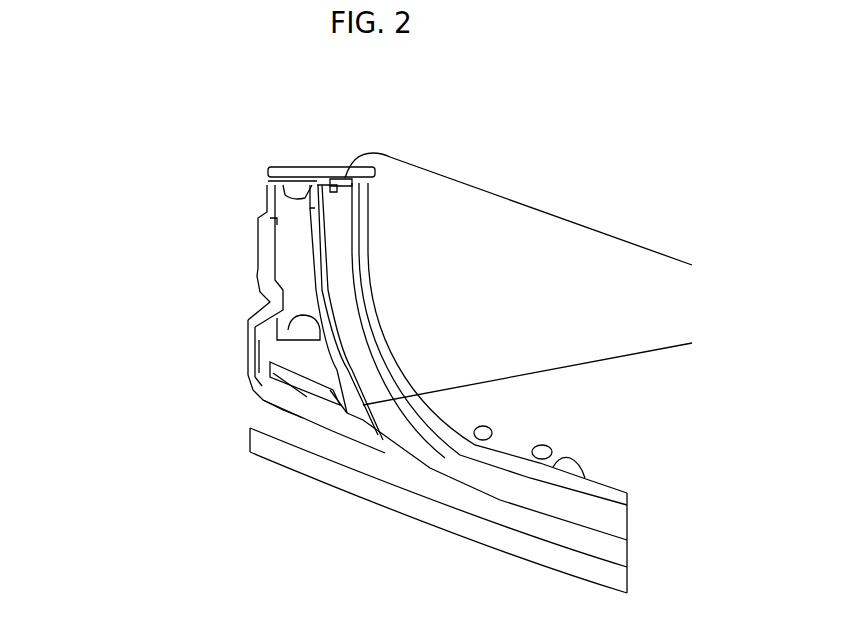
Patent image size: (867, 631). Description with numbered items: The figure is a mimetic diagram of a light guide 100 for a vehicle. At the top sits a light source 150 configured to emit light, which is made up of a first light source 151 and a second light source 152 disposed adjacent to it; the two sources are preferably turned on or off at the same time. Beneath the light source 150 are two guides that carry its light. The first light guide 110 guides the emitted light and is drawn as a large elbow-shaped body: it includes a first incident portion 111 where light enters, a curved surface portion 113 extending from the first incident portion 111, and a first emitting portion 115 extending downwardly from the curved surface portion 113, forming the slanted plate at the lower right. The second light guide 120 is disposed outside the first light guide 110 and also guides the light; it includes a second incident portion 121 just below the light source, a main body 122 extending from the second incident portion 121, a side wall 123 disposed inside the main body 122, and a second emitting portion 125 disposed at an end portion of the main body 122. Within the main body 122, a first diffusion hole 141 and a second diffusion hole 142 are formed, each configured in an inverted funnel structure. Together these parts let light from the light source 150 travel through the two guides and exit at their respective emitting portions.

The light guide 100 is at (104, 135).
The first light guide 110 is at (728, 270).
The first incident portion 111 is at (535, 214).
The curved surface portion 113 is at (545, 368).
The first emitting portion 115 is at (627, 548).
The second light guide 120 is at (102, 190).
The second incident portion 121 is at (268, 180).
The main body 122 is at (297, 357).
The side wall 123 is at (317, 281).
The second emitting portion 125 is at (342, 406).
The first diffusion hole 141 is at (277, 317).
The second diffusion hole 142 is at (263, 374).
The light source 150 is at (344, 108).
The first light source 151 is at (337, 170).
The second light source 152 is at (293, 170).